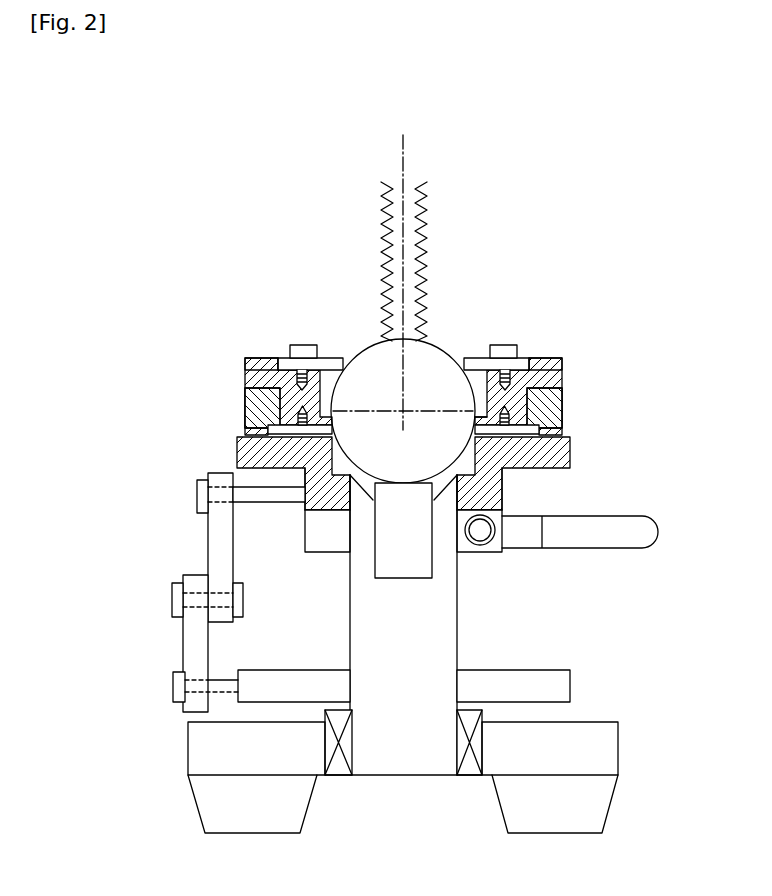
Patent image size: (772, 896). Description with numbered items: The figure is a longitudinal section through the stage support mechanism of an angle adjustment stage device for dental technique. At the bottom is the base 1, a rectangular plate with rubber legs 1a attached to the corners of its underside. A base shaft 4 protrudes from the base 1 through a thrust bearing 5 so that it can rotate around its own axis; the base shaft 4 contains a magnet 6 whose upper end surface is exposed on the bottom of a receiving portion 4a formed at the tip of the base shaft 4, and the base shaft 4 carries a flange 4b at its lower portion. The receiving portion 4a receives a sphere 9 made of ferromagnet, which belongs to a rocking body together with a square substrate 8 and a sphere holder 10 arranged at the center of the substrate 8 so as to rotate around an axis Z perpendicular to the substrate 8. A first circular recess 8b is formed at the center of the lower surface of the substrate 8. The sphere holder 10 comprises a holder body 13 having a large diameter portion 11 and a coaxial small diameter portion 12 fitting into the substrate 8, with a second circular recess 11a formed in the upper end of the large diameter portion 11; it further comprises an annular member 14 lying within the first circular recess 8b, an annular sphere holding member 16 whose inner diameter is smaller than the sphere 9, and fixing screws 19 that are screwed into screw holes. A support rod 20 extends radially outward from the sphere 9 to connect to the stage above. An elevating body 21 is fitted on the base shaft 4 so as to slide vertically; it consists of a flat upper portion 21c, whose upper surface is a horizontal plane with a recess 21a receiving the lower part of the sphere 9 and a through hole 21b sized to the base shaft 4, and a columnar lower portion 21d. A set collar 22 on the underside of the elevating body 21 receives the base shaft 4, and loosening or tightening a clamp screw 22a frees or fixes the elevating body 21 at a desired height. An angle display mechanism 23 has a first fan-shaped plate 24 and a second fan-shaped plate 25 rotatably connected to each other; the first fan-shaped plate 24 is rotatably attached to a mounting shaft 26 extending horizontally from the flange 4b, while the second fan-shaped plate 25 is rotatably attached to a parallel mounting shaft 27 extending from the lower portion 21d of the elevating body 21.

The base 1 is at (600, 722).
The rubber legs 1a is at (205, 803).
The base shaft 4 is at (458, 645).
The receiving portion 4a is at (502, 482).
The flange 4b is at (309, 677).
The thrust bearing 5 is at (342, 776).
The magnet 6 is at (400, 567).
The substrate 8 is at (245, 413).
The first circular recess 8b is at (562, 430).
The sphere 9 is at (378, 333).
The sphere holder 10 is at (533, 323).
The large diameter portion 11 is at (243, 375).
The second circular recess 11a is at (326, 372).
The small diameter portion 12 is at (243, 385).
The holder body 13 is at (256, 358).
The annular member 14 is at (242, 447).
The annular sphere holding member 16 is at (302, 344).
The fixing screws 19 is at (282, 357).
The support rod 20 is at (426, 232).
The elevating body 21 is at (235, 457).
The recess 21a is at (345, 470).
The through hole 21b is at (448, 487).
The upper portion 21c is at (570, 457).
The lower portion 21d is at (505, 500).
The set collar 22 is at (305, 535).
The clamp screw 22a is at (627, 545).
The angle display mechanism 23 is at (150, 590).
The first fan-shaped plate 24 is at (182, 640).
The second fan-shaped plate 25 is at (207, 540).
The mounting shaft 26 is at (225, 690).
The mounting shaft 27 is at (263, 503).
The axis Z is at (405, 155).